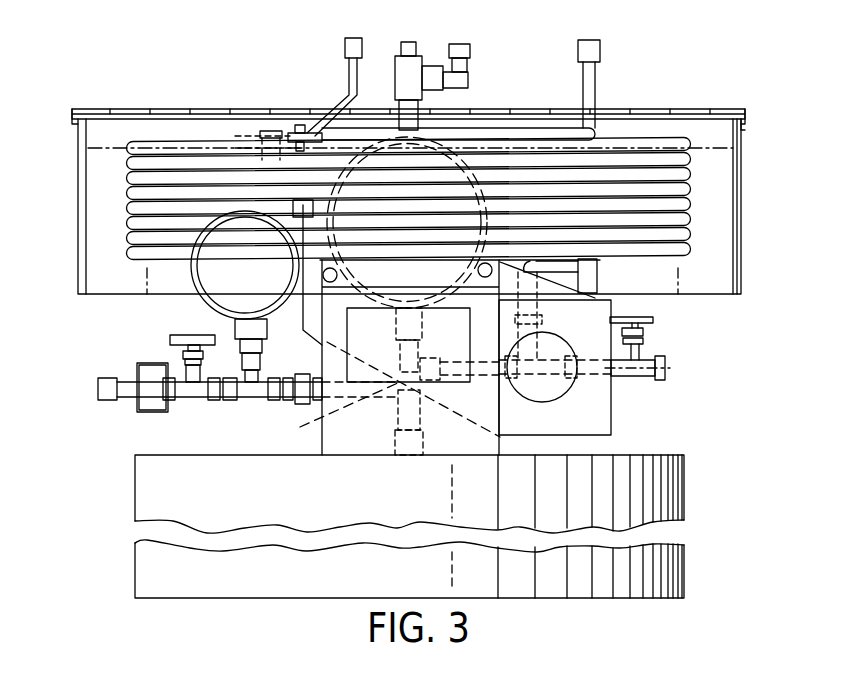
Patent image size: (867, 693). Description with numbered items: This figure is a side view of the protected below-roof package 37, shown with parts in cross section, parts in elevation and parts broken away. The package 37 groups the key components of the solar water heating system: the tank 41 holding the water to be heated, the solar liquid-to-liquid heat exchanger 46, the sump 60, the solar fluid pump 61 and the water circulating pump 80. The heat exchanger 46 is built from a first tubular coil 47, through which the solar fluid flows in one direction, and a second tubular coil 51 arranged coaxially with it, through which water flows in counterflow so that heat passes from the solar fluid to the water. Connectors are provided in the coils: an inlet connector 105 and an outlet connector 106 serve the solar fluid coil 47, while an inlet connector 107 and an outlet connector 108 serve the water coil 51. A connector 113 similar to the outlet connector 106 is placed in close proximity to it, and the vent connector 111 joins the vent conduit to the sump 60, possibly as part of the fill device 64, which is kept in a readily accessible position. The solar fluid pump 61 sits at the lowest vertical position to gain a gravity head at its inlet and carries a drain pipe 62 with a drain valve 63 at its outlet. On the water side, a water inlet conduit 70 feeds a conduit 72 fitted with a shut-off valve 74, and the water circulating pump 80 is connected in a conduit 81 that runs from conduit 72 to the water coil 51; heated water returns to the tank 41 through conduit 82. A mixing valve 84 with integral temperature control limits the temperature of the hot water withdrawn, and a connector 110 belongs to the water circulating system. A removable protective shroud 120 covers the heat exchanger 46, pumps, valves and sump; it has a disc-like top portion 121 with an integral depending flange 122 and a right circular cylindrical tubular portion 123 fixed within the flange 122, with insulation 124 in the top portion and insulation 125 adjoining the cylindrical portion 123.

The protected below-roof package 37 is at (768, 56).
The tank 41 is at (686, 482).
The solar liquid-to-liquid heat exchanger 46 is at (692, 204).
The first tubular coil 47 is at (546, 128).
The second tubular coil 51 is at (566, 138).
The sump 60 is at (343, 120).
The solar fluid pump 61 is at (588, 398).
The drain pipe 62 is at (640, 378).
The drain valve 63 is at (645, 330).
The fill device 64 is at (422, 58).
The water inlet conduit 70 is at (128, 400).
The conduit 72 is at (325, 400).
The shut-off valve 74 is at (170, 340).
The water circulating pump 80 is at (235, 285).
The conduit 81 is at (268, 132).
The conduit 82 is at (465, 400).
The mixing valve 84 is at (153, 412).
The inlet connector 105 is at (598, 272).
The outlet connector 106 is at (598, 50).
The inlet connector 107 is at (316, 134).
The outlet connector 108 is at (555, 366).
The connector 110 is at (98, 388).
The vent connector 111 is at (470, 50).
The connector 113 is at (343, 44).
The protective shroud 120 is at (744, 160).
The disc-like top portion 121 is at (110, 110).
The depending flange 122 is at (745, 130).
The right circular cylindrical tubular portion 123 is at (742, 231).
The insulation 124 is at (172, 125).
The insulation 125 is at (714, 252).